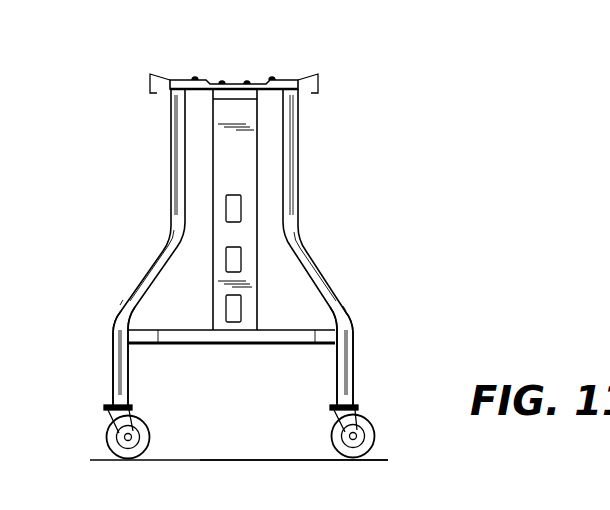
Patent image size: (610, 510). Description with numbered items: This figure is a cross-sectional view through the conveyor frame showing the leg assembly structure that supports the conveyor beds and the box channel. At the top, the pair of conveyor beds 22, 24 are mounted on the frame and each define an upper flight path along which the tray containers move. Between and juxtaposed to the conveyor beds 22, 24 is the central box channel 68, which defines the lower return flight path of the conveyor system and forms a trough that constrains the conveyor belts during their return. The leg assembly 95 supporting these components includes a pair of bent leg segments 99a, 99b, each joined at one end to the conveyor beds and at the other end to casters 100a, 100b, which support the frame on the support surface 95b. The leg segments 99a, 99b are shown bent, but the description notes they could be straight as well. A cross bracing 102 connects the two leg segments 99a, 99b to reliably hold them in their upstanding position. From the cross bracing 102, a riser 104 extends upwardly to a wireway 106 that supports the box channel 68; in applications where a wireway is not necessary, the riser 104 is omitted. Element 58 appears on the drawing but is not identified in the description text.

The conveyor bed 22 is at (171, 76).
The conveyor bed 24 is at (298, 76).
The central box channel 68 is at (218, 79).
The leg assembly 95 is at (171, 213).
The support surface 95b is at (252, 461).
The bent leg segment 99a is at (140, 271).
The bent leg segment 99b is at (317, 265).
The caster 100a is at (150, 437).
The caster 100b is at (375, 436).
The cross bracing 102 is at (270, 344).
The riser 104 is at (258, 276).
The wireway 106 is at (230, 100).
The floor surface 58 is at (133, 461).